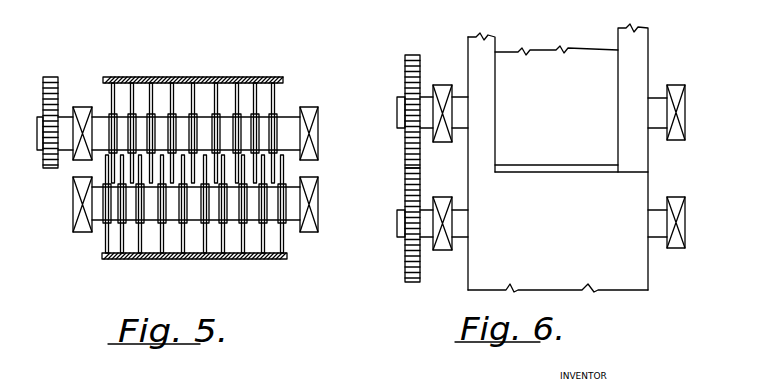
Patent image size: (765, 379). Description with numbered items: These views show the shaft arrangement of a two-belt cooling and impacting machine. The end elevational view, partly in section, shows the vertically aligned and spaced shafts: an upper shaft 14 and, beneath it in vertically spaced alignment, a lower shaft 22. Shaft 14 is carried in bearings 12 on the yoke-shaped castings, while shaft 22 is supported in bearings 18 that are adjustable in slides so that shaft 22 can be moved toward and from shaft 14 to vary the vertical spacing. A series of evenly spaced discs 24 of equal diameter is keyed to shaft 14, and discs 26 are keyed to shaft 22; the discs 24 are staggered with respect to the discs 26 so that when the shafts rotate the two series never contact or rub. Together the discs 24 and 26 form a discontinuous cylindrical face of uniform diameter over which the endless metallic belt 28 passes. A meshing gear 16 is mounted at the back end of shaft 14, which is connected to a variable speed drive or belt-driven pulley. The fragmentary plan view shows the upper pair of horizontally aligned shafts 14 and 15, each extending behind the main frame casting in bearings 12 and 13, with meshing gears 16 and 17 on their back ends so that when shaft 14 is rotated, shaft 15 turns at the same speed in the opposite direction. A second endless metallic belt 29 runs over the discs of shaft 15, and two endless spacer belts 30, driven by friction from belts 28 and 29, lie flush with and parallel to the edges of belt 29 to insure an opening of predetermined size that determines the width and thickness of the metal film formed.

In FIG. 5, the bearing 12 is at (80, 108).
In FIG. 6, the bearing 12 is at (440, 252).
In FIG. 6, the bearing 13 is at (445, 85).
In FIG. 5, the shaft 14 is at (287, 118).
In FIG. 6, the shaft 14 is at (656, 240).
In FIG. 6, the shaft 15 is at (656, 107).
In FIG. 5, the meshing gear 16 is at (53, 76).
In FIG. 6, the meshing gear 16 is at (408, 283).
In FIG. 6, the meshing gear 17 is at (413, 54).
In FIG. 5, the bearing 18 is at (82, 234).
In FIG. 5, the shaft 22 is at (291, 222).
In FIG. 5, the spaced discs 24 is at (180, 95).
In FIG. 5, the discs 26 is at (128, 260).
In FIG. 5, the endless metallic belt 28 is at (123, 78).
In FIG. 6, the endless metallic belt 28 is at (585, 286).
In FIG. 6, the endless metallic belt 29 is at (560, 52).
In FIG. 6, the endless spacer belts 30 is at (488, 38).